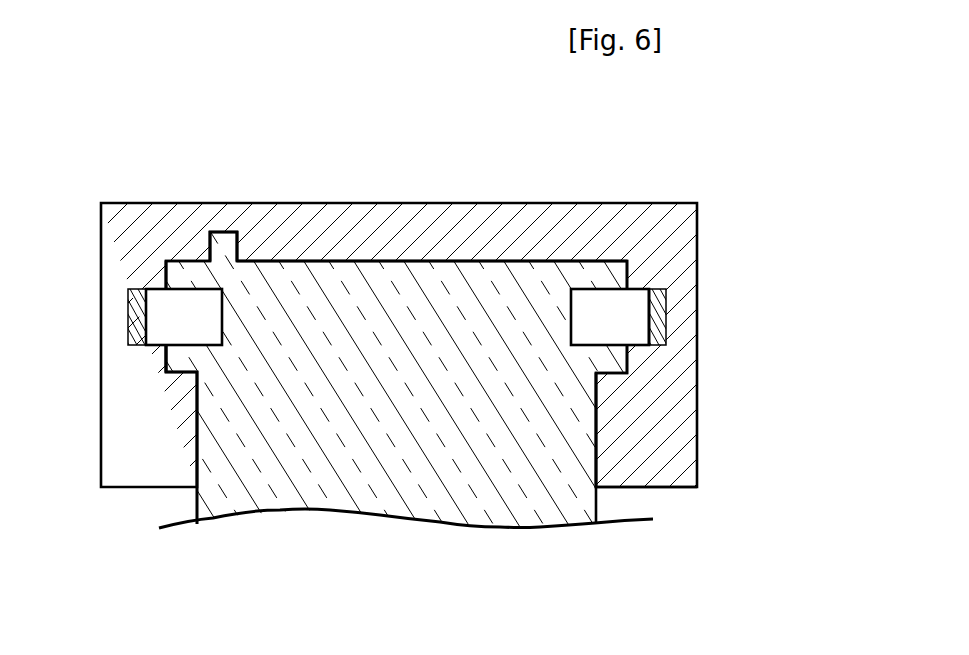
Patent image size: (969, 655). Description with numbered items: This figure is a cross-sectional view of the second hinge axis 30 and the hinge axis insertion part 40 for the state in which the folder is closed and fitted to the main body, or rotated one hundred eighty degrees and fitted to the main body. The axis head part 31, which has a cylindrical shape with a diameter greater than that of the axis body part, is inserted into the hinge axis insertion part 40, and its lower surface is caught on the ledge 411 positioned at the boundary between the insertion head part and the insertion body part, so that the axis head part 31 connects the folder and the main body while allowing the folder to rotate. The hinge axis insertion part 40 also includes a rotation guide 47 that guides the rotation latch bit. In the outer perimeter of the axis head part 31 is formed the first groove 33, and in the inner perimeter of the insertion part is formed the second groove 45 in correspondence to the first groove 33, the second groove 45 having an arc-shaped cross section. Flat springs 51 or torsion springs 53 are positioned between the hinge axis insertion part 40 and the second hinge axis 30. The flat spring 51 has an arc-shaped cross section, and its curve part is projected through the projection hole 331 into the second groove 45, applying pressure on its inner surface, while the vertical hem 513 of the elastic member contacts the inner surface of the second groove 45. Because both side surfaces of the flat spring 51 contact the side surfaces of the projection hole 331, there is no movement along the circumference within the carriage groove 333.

The second hinge axis 30 is at (390, 473).
The axis head part 31 is at (395, 280).
The first groove 33 is at (205, 312).
The carriage groove 333 is at (614, 305).
The projection hole 331 is at (640, 303).
The hinge axis insertion part 40 is at (683, 244).
The ledge 411 is at (195, 362).
The second groove 45 is at (157, 307).
The rotation guide 47 is at (223, 243).
The flat spring 51 is at (654, 346).
The vertical hem 513 is at (663, 322).
The torsion spring 53 is at (130, 337).